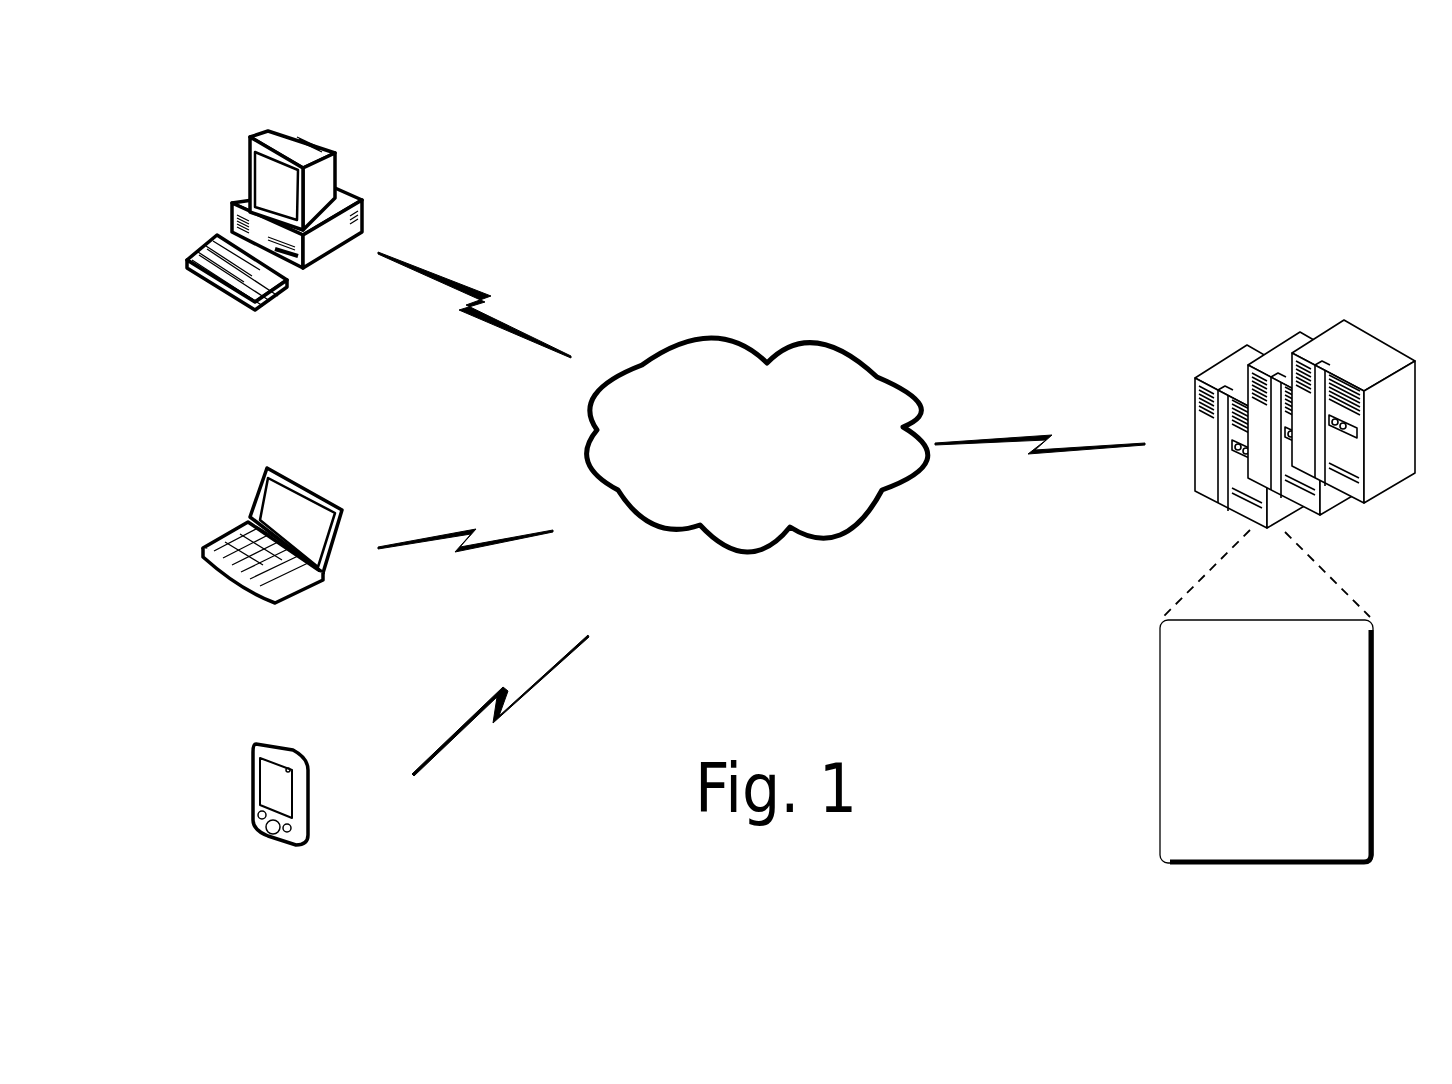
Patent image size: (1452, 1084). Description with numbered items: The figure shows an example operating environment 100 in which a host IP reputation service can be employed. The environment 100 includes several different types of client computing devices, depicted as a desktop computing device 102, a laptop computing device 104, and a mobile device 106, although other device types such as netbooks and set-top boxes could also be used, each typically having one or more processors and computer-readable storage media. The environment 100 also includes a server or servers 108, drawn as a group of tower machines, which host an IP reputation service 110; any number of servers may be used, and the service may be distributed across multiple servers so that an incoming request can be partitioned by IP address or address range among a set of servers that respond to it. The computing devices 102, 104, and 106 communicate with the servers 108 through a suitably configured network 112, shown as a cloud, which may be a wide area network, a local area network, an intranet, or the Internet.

The environment 100 is at (554, 140).
The desktop computing device 102 is at (252, 135).
The laptop computing device 104 is at (267, 468).
The mobile device 106 is at (264, 740).
The servers 108 is at (1240, 343).
The IP reputation service 110 is at (1160, 668).
The network 112 is at (722, 337).